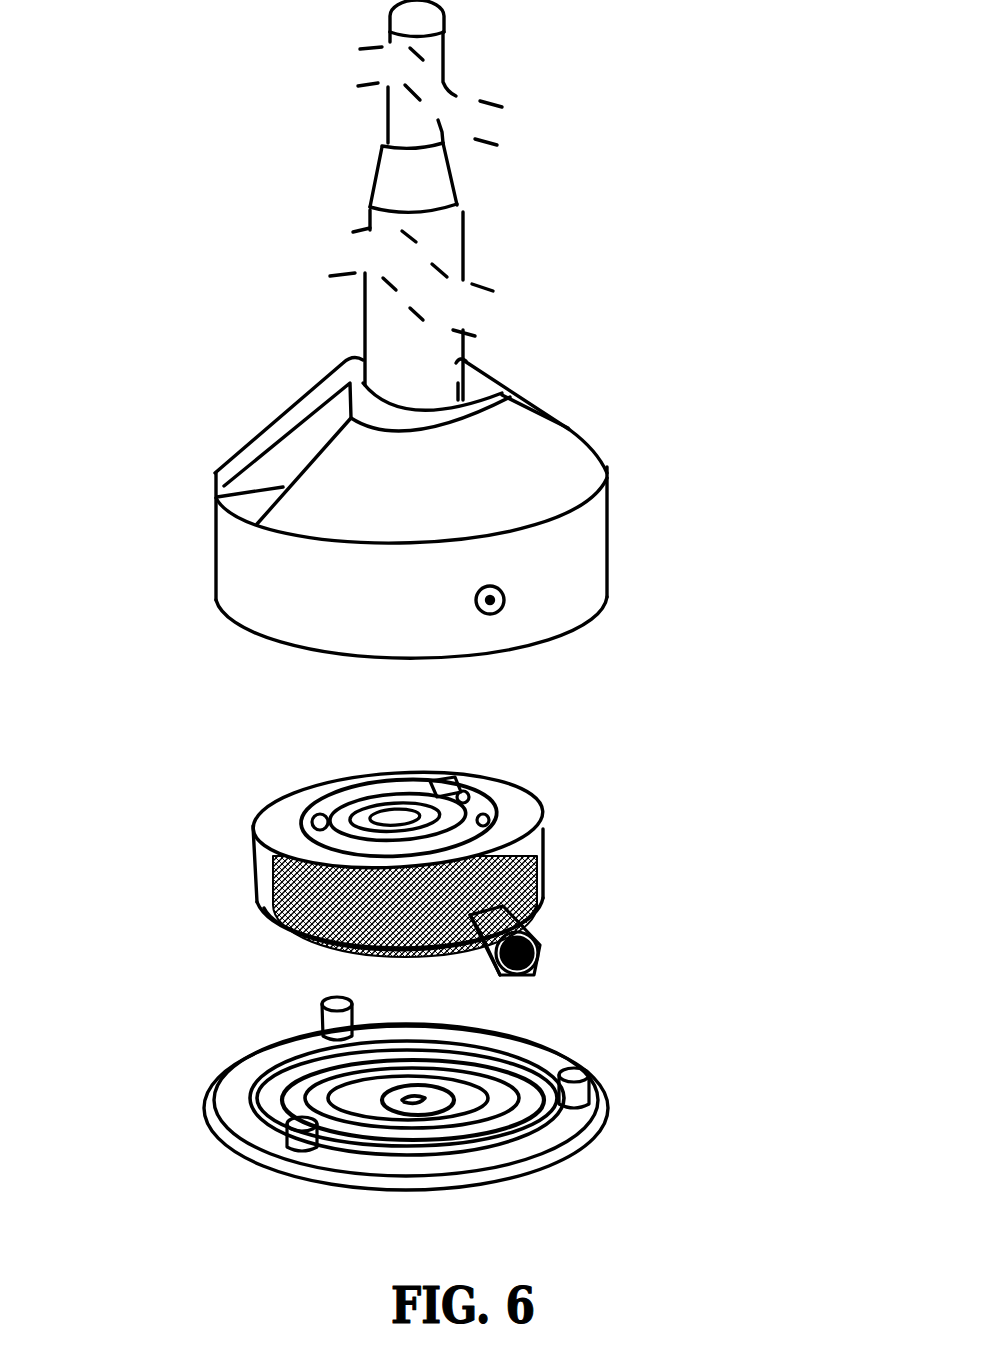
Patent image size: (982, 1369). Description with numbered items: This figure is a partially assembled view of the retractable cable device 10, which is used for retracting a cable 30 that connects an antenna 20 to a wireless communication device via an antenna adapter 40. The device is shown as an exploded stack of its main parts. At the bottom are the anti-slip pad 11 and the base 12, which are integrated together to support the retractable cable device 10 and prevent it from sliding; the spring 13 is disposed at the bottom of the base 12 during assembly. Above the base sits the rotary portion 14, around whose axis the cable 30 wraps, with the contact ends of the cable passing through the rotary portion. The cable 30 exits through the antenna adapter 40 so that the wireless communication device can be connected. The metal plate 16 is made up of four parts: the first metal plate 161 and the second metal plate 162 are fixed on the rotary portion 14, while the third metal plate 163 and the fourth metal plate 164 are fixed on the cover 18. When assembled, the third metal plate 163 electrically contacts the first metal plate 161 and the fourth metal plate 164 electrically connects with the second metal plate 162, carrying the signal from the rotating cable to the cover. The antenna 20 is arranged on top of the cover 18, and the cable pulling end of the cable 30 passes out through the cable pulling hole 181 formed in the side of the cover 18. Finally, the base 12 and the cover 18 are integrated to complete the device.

The retractable cable device 10 is at (715, 235).
The antenna 20 is at (417, 192).
The cover 18 is at (558, 482).
The cable pulling hole 181 is at (505, 596).
The rotary portion 14 is at (253, 843).
The cable 30 is at (543, 880).
The metal plate 16 is at (683, 679).
The first metal plate 161 is at (483, 817).
The second metal plate 162 is at (487, 828).
The third metal plate 163 is at (436, 779).
The fourth metal plate 164 is at (463, 793).
The antenna adapter 40 is at (540, 913).
The anti-slip pad 11 is at (556, 1161).
The base 12 is at (260, 1060).
The spring 13 is at (560, 1068).